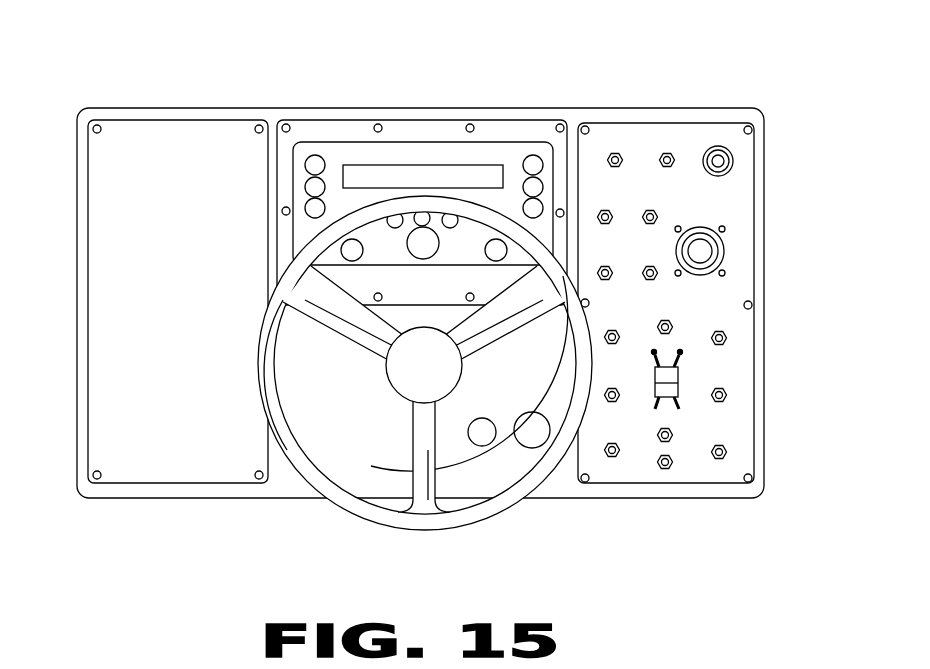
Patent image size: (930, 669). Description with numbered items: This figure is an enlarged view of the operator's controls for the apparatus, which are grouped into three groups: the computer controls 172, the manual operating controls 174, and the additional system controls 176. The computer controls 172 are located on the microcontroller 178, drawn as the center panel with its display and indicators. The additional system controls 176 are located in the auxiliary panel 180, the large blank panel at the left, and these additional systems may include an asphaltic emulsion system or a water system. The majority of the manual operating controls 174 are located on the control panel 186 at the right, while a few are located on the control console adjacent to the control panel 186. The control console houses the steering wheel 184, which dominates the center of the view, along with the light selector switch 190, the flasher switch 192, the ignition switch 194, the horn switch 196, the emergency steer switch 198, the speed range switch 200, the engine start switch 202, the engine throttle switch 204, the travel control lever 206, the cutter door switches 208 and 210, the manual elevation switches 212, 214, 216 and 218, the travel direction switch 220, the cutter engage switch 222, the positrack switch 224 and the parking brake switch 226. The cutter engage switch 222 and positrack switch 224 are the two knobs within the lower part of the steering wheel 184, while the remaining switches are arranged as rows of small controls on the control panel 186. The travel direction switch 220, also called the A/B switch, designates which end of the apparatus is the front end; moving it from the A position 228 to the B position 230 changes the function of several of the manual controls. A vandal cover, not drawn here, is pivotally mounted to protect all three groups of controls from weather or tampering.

The computer controls 172 is at (362, 100).
The manual operating controls 174 is at (780, 470).
The additional system controls 176 is at (117, 525).
The microcontroller 178 is at (336, 148).
The auxiliary panel 180 is at (120, 262).
The steering wheel 184 is at (295, 467).
The control panel 186 is at (745, 214).
The light selector switch 190 is at (615, 152).
The flasher switch 192 is at (667, 152).
The ignition switch 194 is at (727, 147).
The horn switch 196 is at (668, 470).
The emergency steer switch 198 is at (604, 209).
The speed range switch 200 is at (657, 215).
The engine start switch 202 is at (604, 266).
The engine throttle switch 204 is at (656, 278).
The travel control lever 206 is at (725, 251).
The cutter door switch 208 is at (671, 333).
The cutter door switch 210 is at (669, 443).
The manual elevation switch 212 is at (611, 330).
The manual elevation switch 214 is at (726, 340).
The manual elevation switch 216 is at (723, 459).
The manual elevation switch 218 is at (615, 458).
The travel direction switch 220 is at (610, 403).
The cutter engage switch 222 is at (518, 445).
The positrack switch 224 is at (471, 438).
The parking brake switch 226 is at (726, 398).
The A position 228 is at (607, 372).
The B position 230 is at (609, 458).